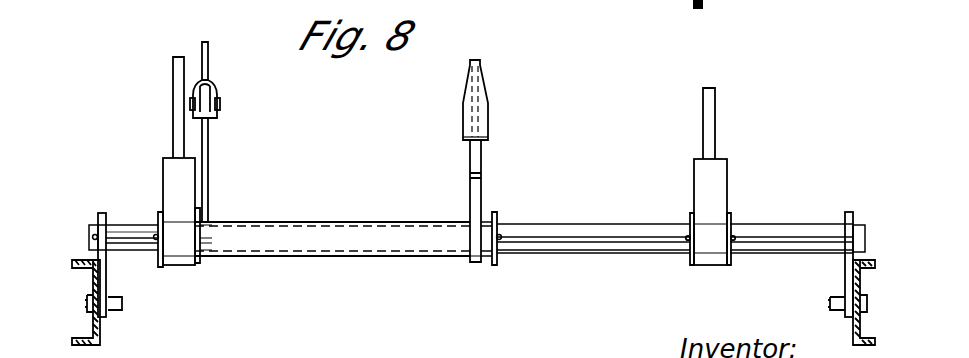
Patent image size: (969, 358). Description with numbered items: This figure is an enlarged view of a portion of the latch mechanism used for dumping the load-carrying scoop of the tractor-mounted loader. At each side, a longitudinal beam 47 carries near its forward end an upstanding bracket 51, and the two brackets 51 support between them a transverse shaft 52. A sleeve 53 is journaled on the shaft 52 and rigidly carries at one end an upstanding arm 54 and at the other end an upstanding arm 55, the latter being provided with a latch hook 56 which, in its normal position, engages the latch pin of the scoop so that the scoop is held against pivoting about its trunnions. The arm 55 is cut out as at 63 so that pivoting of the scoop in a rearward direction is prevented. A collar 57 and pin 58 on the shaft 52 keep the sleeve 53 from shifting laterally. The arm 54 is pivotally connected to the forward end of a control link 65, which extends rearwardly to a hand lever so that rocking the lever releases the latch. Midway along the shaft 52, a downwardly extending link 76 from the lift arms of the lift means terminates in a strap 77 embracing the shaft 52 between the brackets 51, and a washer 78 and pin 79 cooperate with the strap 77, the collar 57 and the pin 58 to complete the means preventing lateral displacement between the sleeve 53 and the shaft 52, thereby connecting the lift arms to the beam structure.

The beam 47 is at (100, 333).
The upstanding bracket 51 is at (104, 213).
The shaft 52 is at (590, 248).
The sleeve 53 is at (332, 222).
The upstanding arm 54 is at (208, 137).
The upstanding arm 55 is at (478, 154).
The latch hook 56 is at (488, 112).
The collar 57 is at (497, 212).
The pin 58 is at (500, 238).
The cut-out 63 is at (478, 174).
The control link 65 is at (208, 51).
The link 76 is at (173, 91).
The strap 77 is at (170, 169).
The washer 78 is at (163, 268).
The pin 79 is at (155, 245).